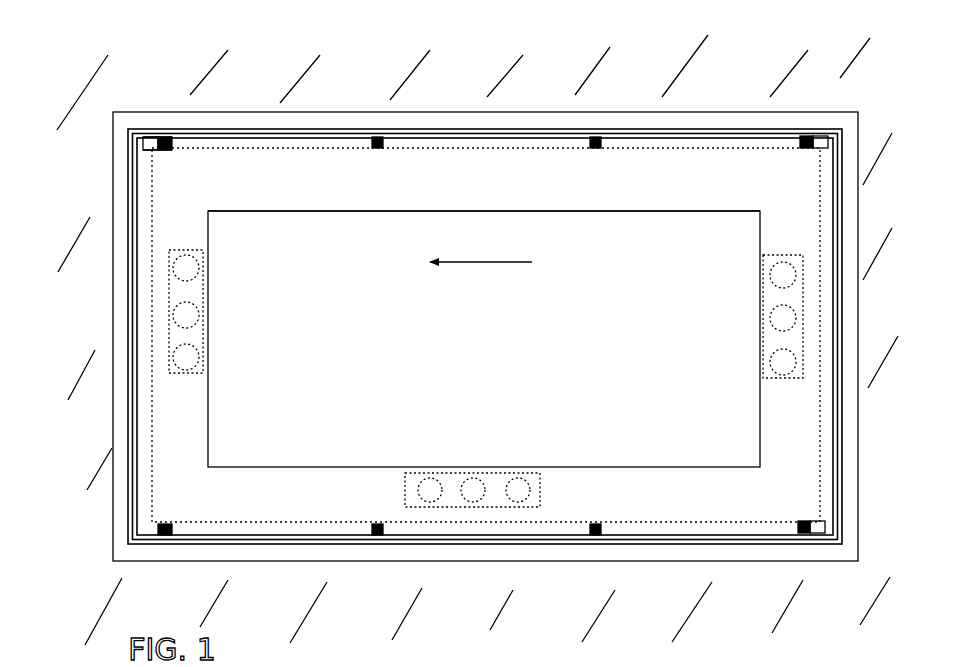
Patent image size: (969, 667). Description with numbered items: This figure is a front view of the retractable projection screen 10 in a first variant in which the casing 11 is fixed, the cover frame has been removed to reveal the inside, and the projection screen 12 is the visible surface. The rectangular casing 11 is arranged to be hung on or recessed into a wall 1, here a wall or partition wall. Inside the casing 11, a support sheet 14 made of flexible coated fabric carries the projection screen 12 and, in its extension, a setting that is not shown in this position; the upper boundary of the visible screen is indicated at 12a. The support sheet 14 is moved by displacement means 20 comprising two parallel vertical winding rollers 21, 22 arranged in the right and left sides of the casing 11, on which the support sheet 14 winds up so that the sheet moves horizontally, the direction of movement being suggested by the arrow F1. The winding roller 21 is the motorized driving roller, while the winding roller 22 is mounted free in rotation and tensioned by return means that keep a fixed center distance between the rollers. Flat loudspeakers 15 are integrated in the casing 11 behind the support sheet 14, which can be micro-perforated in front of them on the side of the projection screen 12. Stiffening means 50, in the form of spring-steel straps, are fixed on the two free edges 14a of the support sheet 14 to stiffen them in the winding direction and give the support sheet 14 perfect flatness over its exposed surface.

The wall 1 is at (722, 0).
The retractable projection screen 10 is at (578, 666).
The casing 11 is at (807, 562).
The projection screen 12 is at (446, 366).
The upper edge of display panel 12a is at (660, 197).
The support sheet 14 is at (167, 415).
The free edges of support sheet 14a is at (296, 149).
The loudspeakers 15 is at (195, 337).
The displacement means 20 is at (163, 158).
The winding roller 21 is at (145, 136).
The winding roller 22 is at (822, 136).
The stiffening means 50 is at (470, 152).
The direction F1 is at (481, 250).